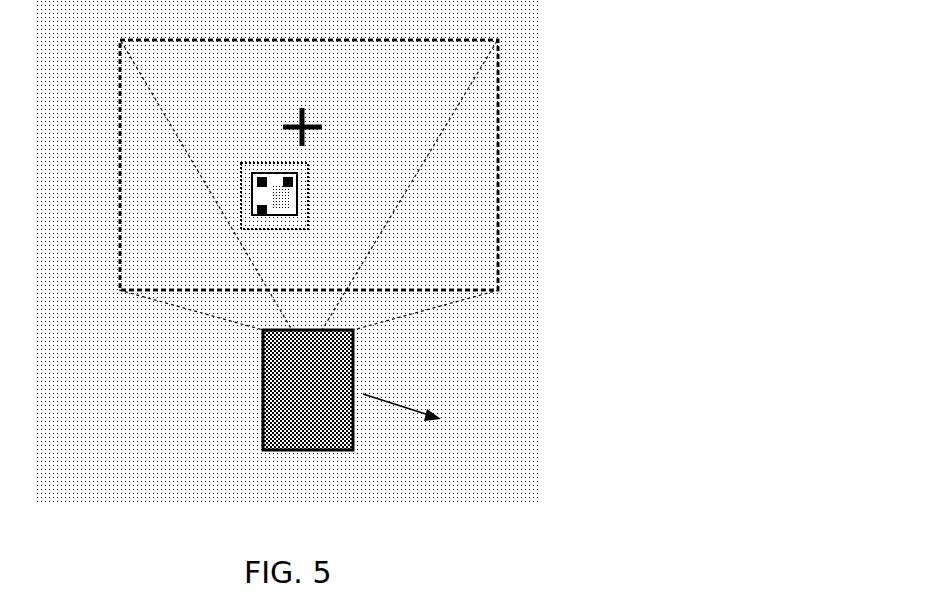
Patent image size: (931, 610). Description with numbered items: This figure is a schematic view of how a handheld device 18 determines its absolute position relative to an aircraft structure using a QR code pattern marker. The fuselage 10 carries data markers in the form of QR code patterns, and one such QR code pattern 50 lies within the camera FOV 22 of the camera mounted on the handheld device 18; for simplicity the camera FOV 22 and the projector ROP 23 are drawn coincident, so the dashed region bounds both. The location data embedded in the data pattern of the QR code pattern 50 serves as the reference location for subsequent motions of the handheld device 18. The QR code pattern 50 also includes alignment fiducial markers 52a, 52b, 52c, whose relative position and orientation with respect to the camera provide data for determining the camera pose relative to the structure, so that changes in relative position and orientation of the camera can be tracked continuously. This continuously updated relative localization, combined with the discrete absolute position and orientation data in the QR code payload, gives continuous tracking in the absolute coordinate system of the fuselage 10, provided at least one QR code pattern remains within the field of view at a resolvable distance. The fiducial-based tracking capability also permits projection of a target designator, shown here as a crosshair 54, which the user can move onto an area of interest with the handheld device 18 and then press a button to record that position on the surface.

The fuselage 10 is at (165, 408).
The handheld device 18 is at (354, 377).
The camera FOV 22 is at (490, 128).
The projector ROP 23 is at (490, 128).
The QR code pattern 50 is at (371, 175).
The alignment fiducial marker 52a is at (258, 211).
The alignment fiducial marker 52b is at (243, 166).
The alignment fiducial marker 52c is at (306, 164).
The crosshair target designator 54 is at (304, 110).